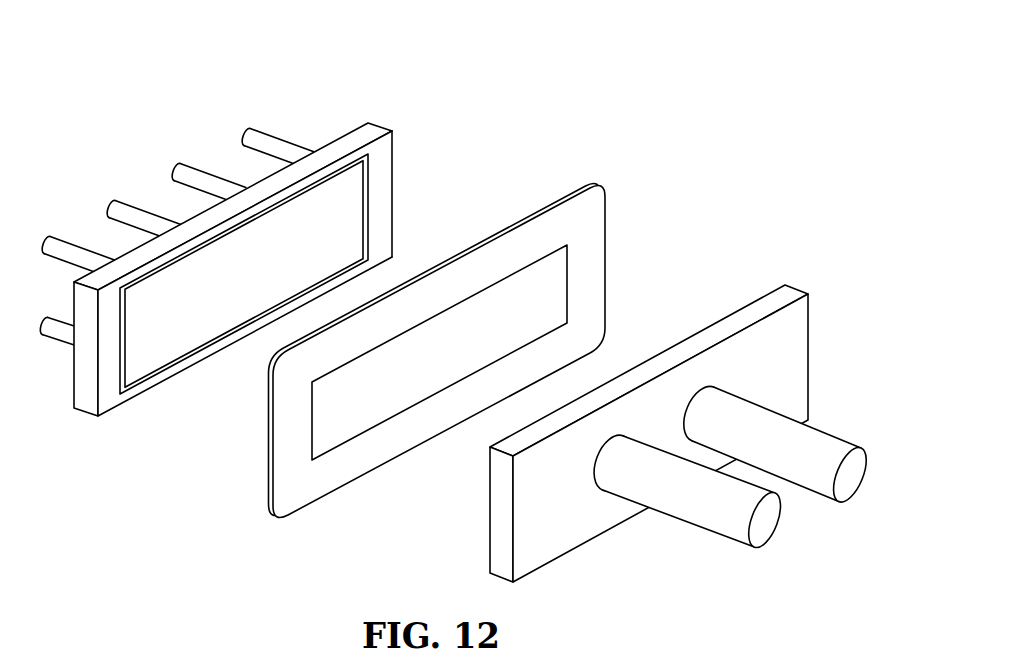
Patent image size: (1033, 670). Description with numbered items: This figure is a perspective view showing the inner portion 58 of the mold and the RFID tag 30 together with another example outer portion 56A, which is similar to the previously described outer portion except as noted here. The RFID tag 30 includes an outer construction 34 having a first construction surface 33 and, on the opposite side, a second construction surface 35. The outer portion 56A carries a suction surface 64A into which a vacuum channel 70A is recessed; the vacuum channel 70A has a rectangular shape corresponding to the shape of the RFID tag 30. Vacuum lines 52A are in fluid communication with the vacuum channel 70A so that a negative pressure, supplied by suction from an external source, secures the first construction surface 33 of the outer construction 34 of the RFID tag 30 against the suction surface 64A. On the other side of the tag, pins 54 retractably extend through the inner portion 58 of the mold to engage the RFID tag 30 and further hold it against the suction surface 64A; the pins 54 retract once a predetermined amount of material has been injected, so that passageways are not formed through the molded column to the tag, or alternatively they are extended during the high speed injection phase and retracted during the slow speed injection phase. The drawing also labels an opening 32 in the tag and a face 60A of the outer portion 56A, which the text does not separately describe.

The RFID tag 30 is at (640, 70).
The opening of seal 32 is at (560, 287).
The first construction surface 33 is at (567, 187).
The outer construction 34 is at (595, 182).
The second construction surface 35 is at (485, 320).
The vacuum lines 52A is at (243, 130).
The pins 54 is at (867, 483).
The outer portion 56A is at (285, 250).
The inner portion 58 is at (810, 342).
The frame front face 60A is at (105, 382).
The suction surface 64A is at (393, 202).
The vacuum channel 70A is at (370, 172).